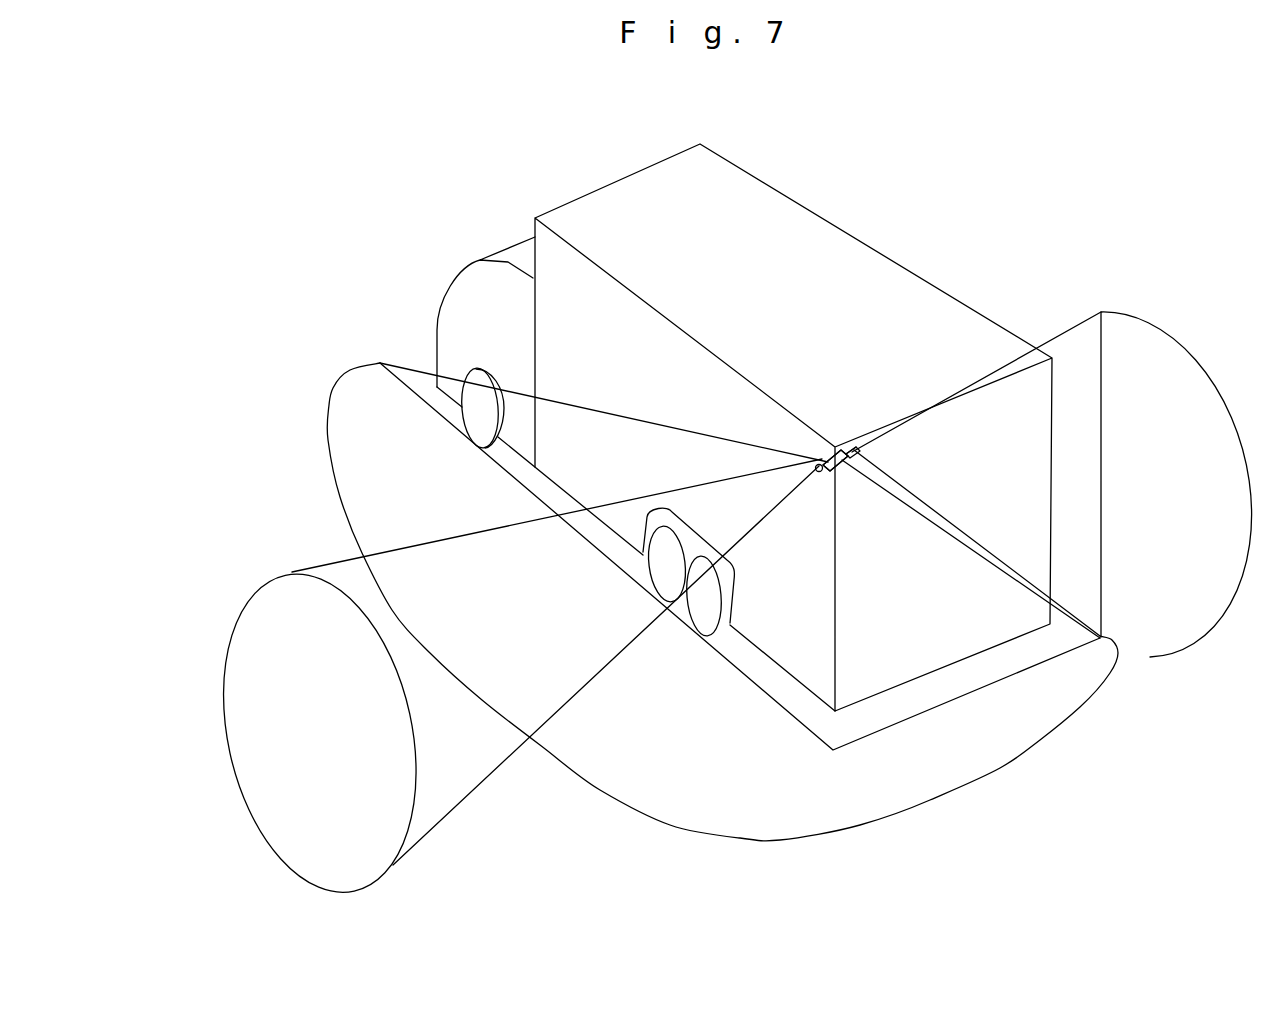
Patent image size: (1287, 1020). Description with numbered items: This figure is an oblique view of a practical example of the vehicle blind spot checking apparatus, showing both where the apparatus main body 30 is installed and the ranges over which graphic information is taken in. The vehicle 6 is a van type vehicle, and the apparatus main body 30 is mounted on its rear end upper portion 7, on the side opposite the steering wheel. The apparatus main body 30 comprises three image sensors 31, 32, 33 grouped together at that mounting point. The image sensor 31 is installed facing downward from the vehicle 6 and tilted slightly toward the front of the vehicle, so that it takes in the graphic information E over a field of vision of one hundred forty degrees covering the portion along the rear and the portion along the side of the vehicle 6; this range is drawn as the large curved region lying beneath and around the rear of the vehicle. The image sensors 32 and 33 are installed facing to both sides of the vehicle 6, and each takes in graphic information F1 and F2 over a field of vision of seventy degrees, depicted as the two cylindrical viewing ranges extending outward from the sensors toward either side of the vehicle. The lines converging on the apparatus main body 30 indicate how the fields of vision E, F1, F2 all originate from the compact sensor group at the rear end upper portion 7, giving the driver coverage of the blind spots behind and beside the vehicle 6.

The vehicle 6 is at (840, 227).
The rear end upper portion 7 is at (851, 440).
The apparatus main body 30 is at (828, 448).
The image sensor 31 is at (830, 442).
The image sensor 32 is at (852, 474).
The image sensor 33 is at (821, 478).
The graphic information E is at (691, 734).
The graphic information F1 is at (1182, 513).
The graphic information F2 is at (303, 720).